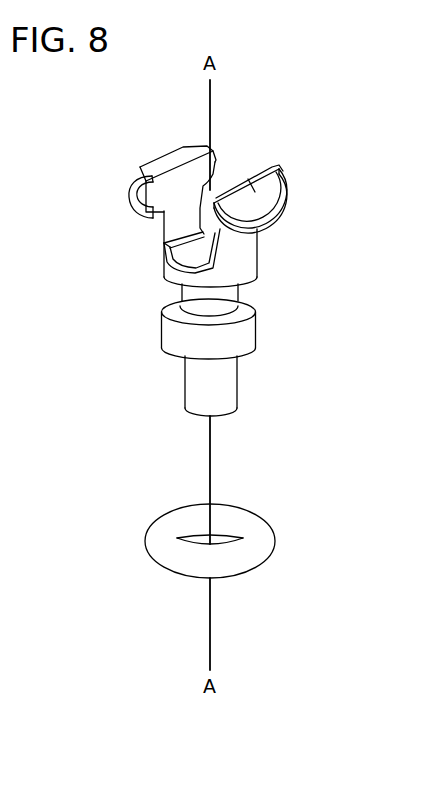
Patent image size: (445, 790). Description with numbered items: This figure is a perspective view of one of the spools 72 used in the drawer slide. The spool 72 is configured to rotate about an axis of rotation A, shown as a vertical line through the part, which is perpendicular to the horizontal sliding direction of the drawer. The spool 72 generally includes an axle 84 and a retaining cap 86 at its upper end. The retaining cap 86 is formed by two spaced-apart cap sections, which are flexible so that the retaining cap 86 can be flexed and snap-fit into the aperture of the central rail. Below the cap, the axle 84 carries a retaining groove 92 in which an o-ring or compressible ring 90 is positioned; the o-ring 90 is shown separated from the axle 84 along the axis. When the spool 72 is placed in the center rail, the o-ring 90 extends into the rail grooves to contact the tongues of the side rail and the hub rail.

The spool 72 is at (370, 149).
The axle 84 is at (205, 387).
The retaining cap 86 is at (283, 247).
The o-ring 90 is at (257, 530).
The retaining groove 92 is at (158, 297).